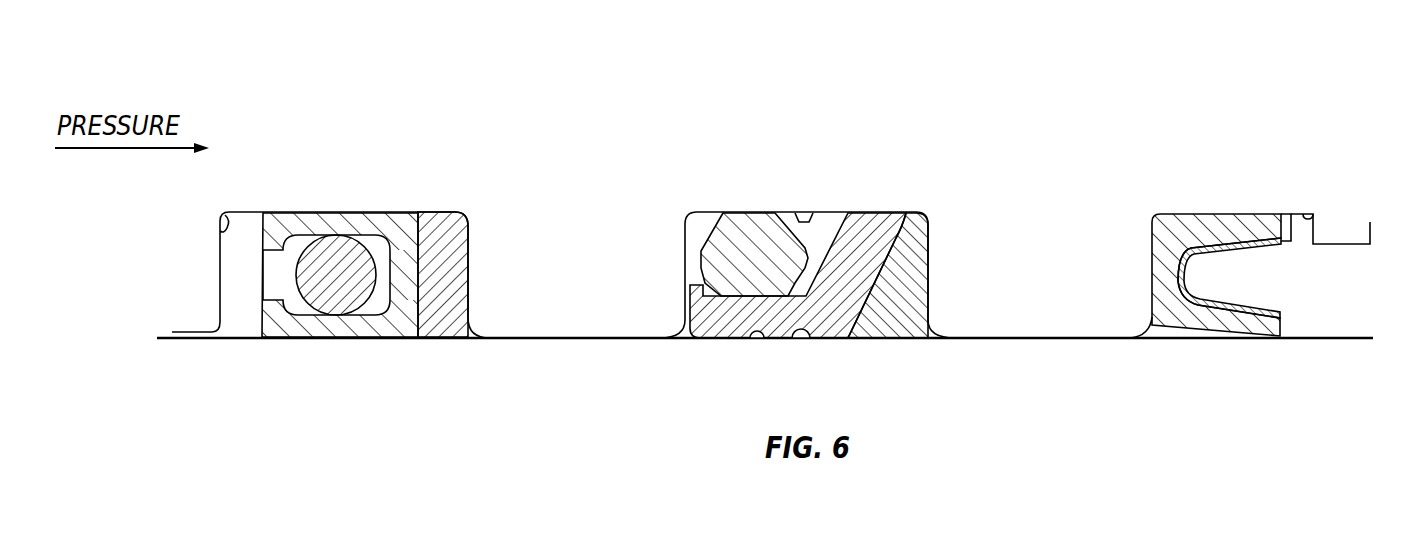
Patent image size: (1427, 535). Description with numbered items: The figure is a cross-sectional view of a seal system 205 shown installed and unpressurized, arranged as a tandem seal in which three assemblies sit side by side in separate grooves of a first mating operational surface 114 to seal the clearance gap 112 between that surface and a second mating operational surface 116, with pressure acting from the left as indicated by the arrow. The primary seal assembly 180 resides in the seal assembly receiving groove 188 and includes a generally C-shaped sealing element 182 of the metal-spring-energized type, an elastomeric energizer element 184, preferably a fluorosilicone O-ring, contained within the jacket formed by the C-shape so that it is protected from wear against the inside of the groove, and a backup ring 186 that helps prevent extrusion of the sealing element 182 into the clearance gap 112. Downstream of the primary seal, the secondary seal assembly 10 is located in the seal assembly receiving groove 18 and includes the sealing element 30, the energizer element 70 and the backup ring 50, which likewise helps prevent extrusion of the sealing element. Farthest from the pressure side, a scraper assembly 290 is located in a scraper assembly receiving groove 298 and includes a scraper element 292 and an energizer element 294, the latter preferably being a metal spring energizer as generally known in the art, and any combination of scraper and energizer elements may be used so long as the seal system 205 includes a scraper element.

The seal assembly 10 is at (838, 182).
The seal assembly receiving groove 18 is at (797, 212).
The sealing element 30 is at (888, 212).
The backup ring 50 is at (898, 330).
The energizer element 70 is at (750, 218).
The clearance gap 112 is at (138, 329).
The first mating operational surface 114 is at (172, 332).
The second mating operational surface 116 is at (163, 338).
The primary seal assembly 180 is at (317, 360).
The sealing element 182 is at (382, 222).
The energizer element 184 is at (307, 246).
The backup ring 186 is at (447, 335).
The seal assembly receiving groove 188 is at (220, 231).
The seal system 205 is at (1080, 66).
The scraper assembly 290 is at (1308, 176).
The scraper element 292 is at (1201, 214).
The energizer element 294 is at (1273, 315).
The scraper assembly receiving groove 298 is at (1320, 214).